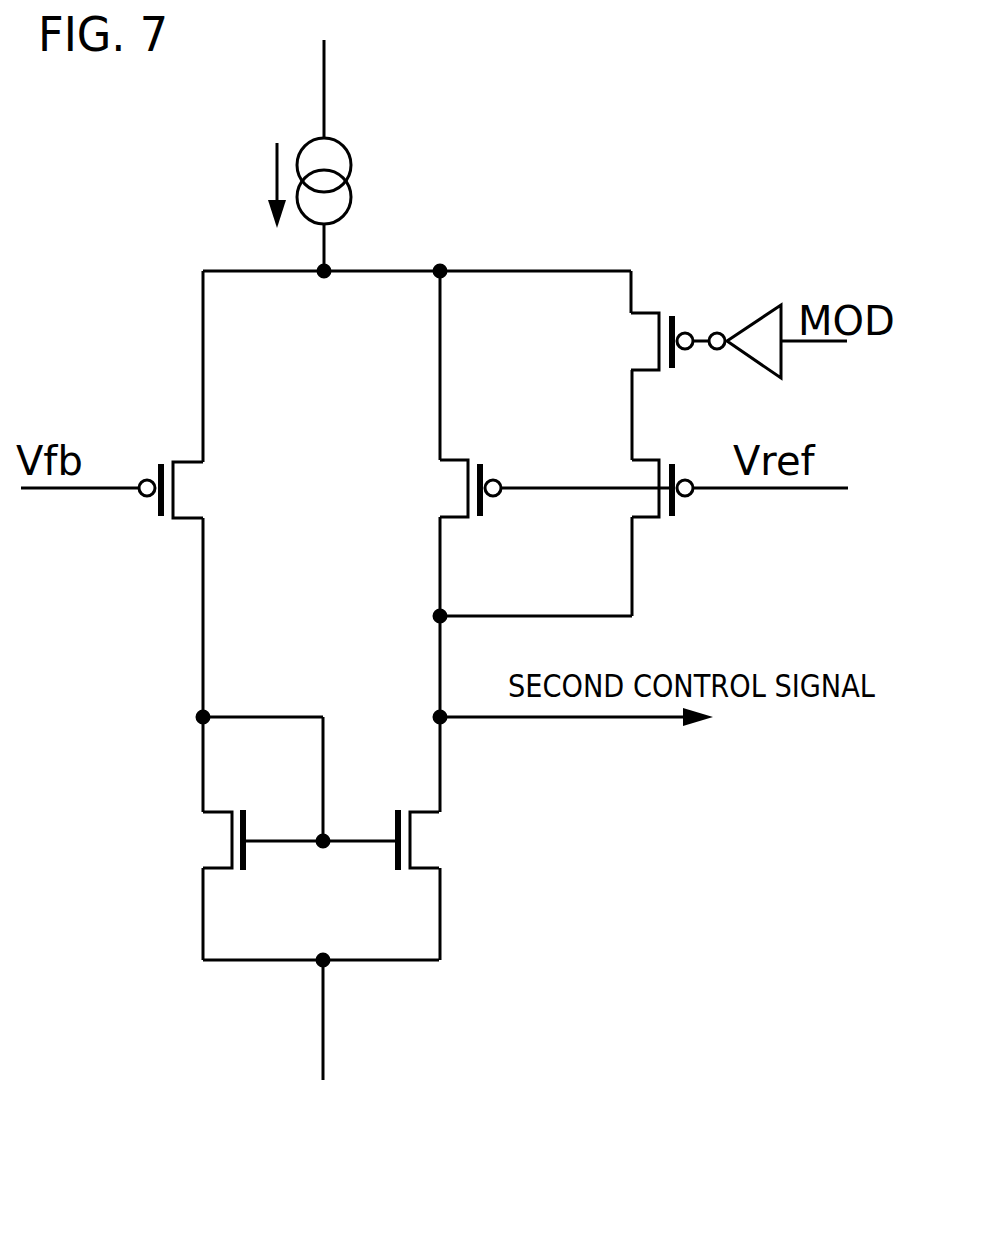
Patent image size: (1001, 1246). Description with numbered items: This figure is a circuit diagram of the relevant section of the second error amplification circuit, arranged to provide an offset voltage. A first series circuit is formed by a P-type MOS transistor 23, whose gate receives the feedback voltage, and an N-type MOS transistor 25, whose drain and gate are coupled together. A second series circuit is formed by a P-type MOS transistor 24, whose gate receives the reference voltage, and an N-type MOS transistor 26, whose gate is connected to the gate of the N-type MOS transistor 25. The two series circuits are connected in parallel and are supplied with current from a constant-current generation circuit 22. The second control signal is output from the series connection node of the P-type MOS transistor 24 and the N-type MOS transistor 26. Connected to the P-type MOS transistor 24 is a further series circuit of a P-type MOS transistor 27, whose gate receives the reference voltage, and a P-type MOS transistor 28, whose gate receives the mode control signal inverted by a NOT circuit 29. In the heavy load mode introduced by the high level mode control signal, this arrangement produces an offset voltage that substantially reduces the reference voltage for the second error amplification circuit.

The constant-current generation circuit 22 is at (373, 178).
The P-type MOS transistor 23 is at (205, 492).
The P-type MOS transistor 24 is at (437, 490).
The N-type MOS transistor 25 is at (195, 838).
The N-type MOS transistor 26 is at (440, 835).
The P-type MOS transistor 27 is at (660, 525).
The P-type MOS transistor 28 is at (630, 342).
The NOT circuit 29 is at (758, 311).